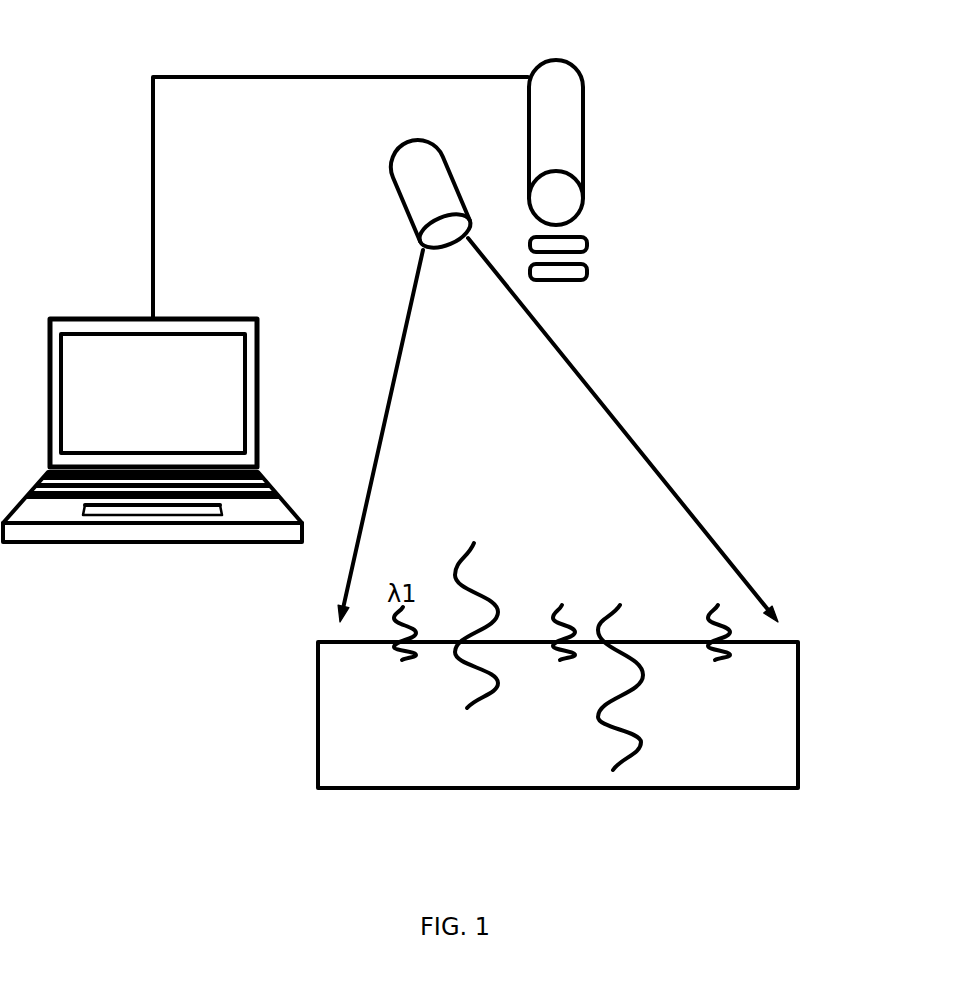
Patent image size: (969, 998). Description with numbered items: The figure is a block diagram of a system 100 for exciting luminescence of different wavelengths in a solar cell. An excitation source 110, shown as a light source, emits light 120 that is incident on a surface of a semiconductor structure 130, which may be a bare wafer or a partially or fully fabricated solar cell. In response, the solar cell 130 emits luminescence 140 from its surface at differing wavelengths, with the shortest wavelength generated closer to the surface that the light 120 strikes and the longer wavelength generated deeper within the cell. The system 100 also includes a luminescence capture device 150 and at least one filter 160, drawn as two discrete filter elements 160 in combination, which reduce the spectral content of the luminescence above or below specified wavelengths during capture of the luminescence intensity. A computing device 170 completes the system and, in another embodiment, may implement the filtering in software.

The system 100 is at (260, 54).
The excitation source 110 is at (398, 197).
The light 120 is at (680, 498).
The semiconductor structure 130 is at (798, 688).
The luminescence 140 is at (658, 749).
The luminescence capture device 150 is at (583, 143).
The filter 160 is at (623, 252).
The computing device 170 is at (257, 440).